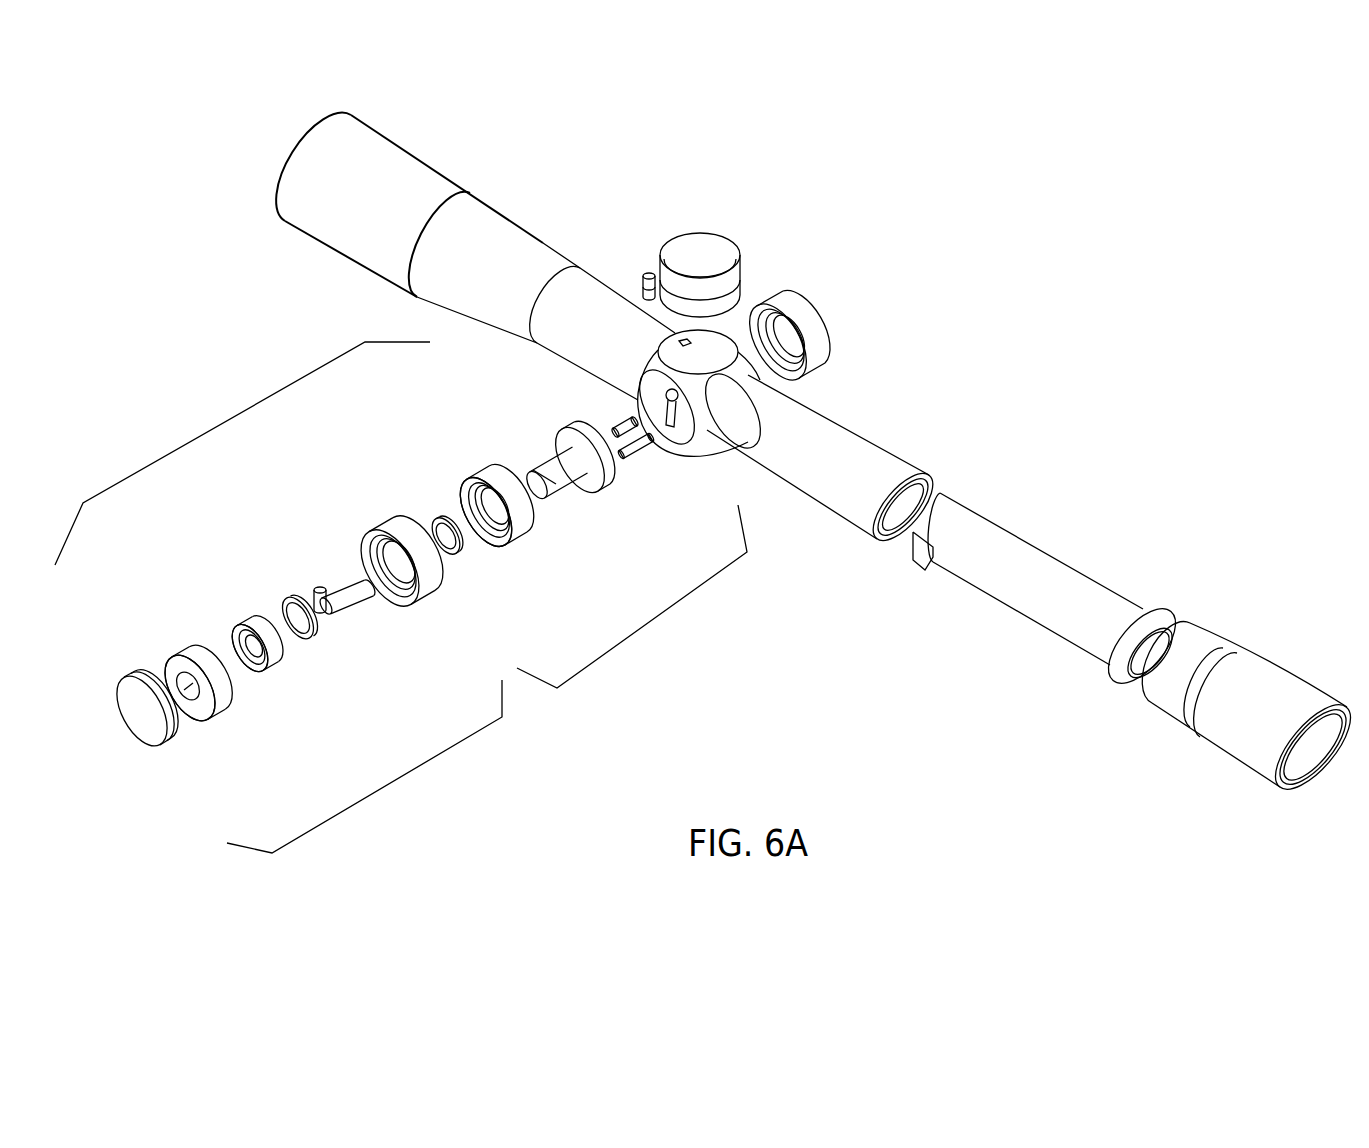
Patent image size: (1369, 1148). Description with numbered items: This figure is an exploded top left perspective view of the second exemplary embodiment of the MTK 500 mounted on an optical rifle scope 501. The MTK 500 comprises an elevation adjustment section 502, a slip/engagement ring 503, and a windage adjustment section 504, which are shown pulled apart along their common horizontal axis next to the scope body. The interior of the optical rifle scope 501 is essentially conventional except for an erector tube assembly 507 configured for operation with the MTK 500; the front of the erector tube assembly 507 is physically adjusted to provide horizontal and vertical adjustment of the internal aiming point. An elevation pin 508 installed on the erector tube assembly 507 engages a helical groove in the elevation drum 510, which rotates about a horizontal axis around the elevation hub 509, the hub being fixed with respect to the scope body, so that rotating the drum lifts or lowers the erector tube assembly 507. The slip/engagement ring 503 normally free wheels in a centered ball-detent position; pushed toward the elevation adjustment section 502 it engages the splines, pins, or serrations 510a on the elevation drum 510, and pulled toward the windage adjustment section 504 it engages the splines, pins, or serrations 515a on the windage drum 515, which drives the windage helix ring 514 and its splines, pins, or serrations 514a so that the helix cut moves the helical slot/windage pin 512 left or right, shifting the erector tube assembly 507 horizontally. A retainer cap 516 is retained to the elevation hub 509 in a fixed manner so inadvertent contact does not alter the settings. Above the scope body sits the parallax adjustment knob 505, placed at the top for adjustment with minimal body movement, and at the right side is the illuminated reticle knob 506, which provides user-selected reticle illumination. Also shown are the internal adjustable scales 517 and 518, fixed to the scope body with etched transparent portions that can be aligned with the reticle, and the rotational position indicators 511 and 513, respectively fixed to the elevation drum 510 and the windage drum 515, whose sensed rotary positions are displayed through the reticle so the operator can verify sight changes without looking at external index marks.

The MTK 500 is at (222, 427).
The optical rifle scope 501 is at (407, 288).
The elevation adjustment section 502 is at (658, 615).
The slip/engagement ring 503 is at (368, 522).
The windage adjustment section 504 is at (382, 788).
The parallax adjustment knob 505 is at (737, 240).
The illuminated reticle knob 506 is at (818, 293).
The erector tube assembly 507 is at (1013, 607).
The elevation pin 508 is at (642, 453).
The elevation hub 509 is at (572, 493).
The elevation drum 510 is at (515, 548).
The splines, pins, or serrations 510a is at (463, 487).
The rotational position indicator 511 is at (460, 562).
The helical slot/windage pin 512 is at (357, 612).
The rotational position indicator 513 is at (310, 640).
The windage helix ring 514 is at (268, 665).
The splines, pins, or serrations 514a is at (243, 622).
The windage drum 515 is at (222, 713).
The splines, pins, or serrations 515a is at (197, 638).
The retainer cap 516 is at (162, 745).
The internal adjustable scale 517 is at (612, 420).
The internal adjustable scale 518 is at (650, 270).